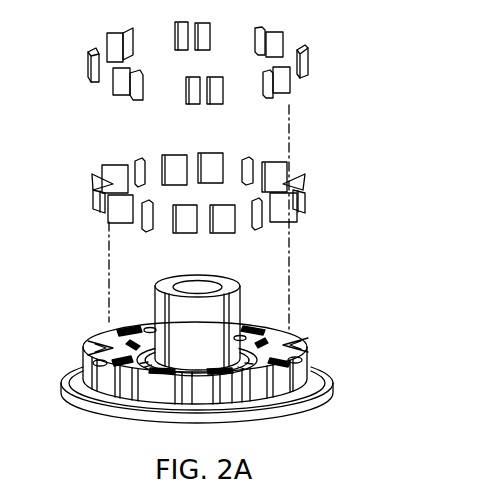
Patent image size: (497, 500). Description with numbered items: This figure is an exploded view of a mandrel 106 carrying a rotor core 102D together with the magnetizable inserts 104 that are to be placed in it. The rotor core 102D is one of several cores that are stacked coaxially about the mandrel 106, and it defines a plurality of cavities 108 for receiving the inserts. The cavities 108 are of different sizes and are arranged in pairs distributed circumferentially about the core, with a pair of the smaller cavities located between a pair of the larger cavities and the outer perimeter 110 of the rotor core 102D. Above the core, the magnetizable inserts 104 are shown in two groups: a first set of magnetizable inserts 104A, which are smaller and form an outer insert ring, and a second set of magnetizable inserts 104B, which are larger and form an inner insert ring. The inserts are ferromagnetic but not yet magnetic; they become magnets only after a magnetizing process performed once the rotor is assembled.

The magnetizable inserts 104 is at (77, 222).
The first set of magnetizable inserts 104A is at (325, 37).
The second set of magnetizable inserts 104B is at (323, 182).
The rotor core 102D is at (303, 362).
The mandrel 106 is at (324, 392).
The cavities 108 is at (79, 333).
The outer perimeter 110 is at (97, 372).